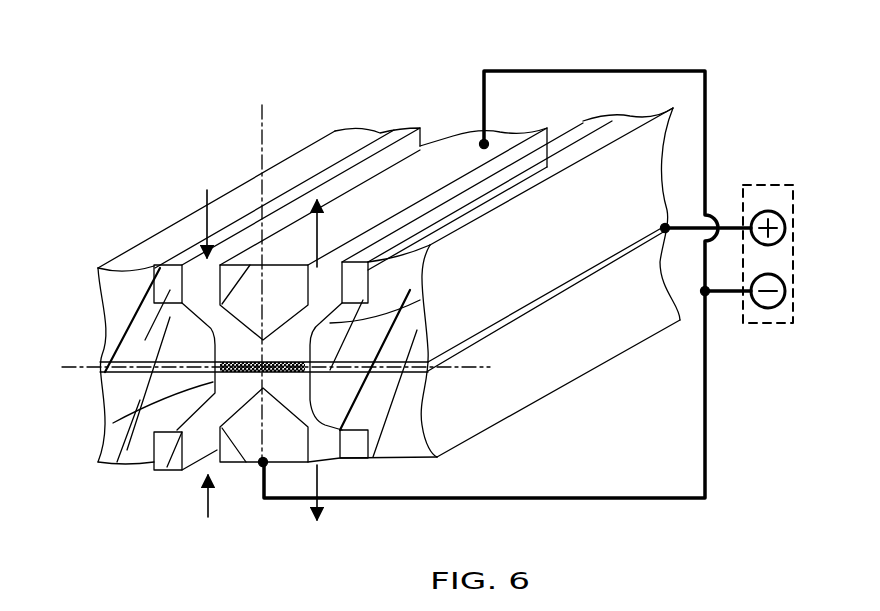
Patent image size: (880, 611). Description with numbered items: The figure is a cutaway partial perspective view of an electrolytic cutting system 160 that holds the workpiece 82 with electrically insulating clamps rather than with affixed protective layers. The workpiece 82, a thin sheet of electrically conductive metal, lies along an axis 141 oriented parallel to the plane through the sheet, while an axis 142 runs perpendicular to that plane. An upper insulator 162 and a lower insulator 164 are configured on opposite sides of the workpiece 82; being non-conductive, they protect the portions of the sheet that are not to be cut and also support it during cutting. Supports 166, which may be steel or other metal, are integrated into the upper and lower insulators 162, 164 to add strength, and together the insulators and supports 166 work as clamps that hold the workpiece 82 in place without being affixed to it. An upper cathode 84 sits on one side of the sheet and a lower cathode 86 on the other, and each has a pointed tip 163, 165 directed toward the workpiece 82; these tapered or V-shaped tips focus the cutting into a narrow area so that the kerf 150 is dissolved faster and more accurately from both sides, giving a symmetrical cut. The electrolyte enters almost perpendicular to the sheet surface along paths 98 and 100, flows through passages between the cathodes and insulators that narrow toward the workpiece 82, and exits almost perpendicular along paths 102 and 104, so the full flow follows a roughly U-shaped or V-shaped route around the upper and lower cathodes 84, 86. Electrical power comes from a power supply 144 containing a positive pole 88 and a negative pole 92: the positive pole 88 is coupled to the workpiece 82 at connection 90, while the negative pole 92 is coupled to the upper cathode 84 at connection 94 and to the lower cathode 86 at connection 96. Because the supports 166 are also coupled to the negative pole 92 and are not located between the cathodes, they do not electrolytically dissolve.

The workpiece 82 is at (537, 303).
The upper cathode 84 is at (454, 140).
The lower cathode 86 is at (243, 455).
The positive pole 88 is at (777, 212).
The connection 90 is at (672, 220).
The negative pole 92 is at (776, 306).
The connection 94 is at (488, 140).
The connection 96 is at (270, 468).
The path 98 is at (206, 194).
The path 100 is at (207, 498).
The path 102 is at (319, 228).
The path 104 is at (320, 507).
The axis 141 is at (80, 362).
The axis 142 is at (262, 118).
The power supply 144 is at (745, 190).
The kerf 150 is at (300, 405).
The electrolytic cutting system 160 is at (636, 50).
The upper insulator 162 is at (118, 318).
The pointed tip 163 is at (420, 300).
The lower insulator 164 is at (112, 450).
The pointed tip 165 is at (135, 410).
The supports 166 is at (167, 265).